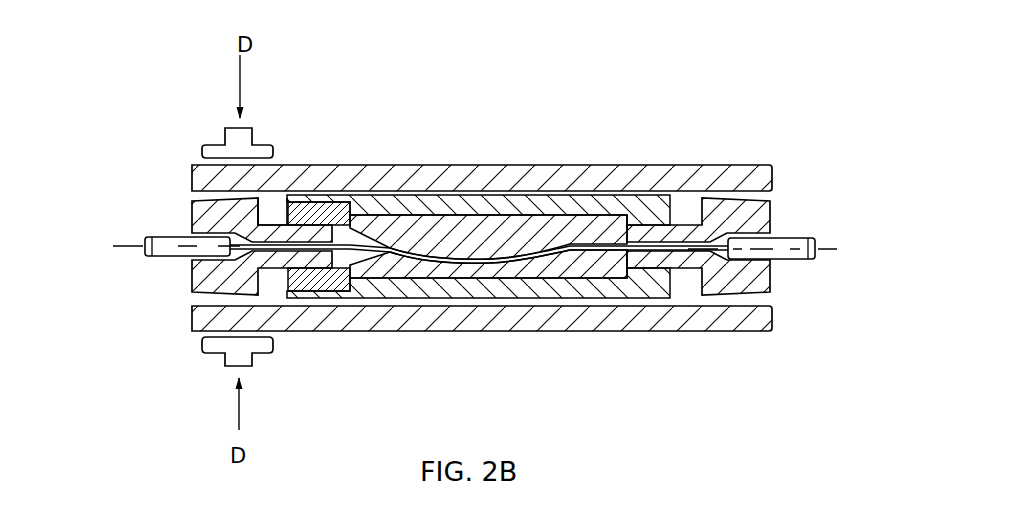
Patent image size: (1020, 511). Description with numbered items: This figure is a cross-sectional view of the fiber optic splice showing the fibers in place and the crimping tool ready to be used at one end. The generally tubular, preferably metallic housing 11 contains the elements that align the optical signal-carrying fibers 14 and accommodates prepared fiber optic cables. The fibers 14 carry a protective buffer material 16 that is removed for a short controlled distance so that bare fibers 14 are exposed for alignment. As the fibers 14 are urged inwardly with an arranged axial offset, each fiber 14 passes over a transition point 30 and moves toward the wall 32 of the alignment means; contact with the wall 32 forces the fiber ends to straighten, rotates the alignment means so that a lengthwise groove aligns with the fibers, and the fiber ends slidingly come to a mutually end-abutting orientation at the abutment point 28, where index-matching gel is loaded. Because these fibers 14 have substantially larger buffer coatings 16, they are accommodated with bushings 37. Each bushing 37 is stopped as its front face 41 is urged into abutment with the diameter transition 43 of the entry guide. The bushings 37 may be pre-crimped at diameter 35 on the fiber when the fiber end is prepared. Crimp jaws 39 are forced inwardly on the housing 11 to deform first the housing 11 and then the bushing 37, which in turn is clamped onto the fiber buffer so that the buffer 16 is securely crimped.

The housing 11 is at (690, 166).
The optical fibers 14 is at (530, 252).
The protective buffer material 16 is at (793, 240).
The fiber-to-fiber abutment point 28 is at (478, 247).
The transition point 30 is at (392, 239).
The wall 32 is at (437, 265).
The pre-crimp diameter 35 is at (278, 222).
The bushings 37 is at (189, 199).
The crimp jaws 39 is at (237, 142).
The front face 41 is at (623, 227).
The diameter transition 43 is at (343, 275).